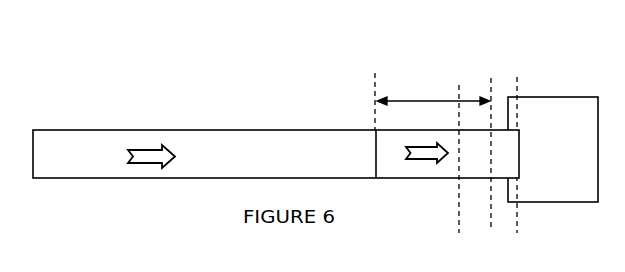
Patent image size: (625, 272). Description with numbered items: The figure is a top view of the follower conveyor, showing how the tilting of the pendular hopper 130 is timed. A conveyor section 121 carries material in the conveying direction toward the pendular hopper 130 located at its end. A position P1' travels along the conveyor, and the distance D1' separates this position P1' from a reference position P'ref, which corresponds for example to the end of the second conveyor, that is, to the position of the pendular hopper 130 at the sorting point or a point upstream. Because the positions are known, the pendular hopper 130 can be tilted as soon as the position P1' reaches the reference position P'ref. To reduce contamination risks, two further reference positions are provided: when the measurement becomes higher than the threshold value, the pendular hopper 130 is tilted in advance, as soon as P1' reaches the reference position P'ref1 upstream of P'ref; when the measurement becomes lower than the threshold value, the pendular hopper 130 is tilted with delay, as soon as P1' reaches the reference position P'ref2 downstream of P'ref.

The first component / workpiece section 121 is at (116, 166).
The pendular hopper 130 is at (574, 166).
The position P1' is at (353, 101).
The reference position P'ref is at (516, 123).
The reference position P'ref1 is at (418, 162).
The reference position P'ref2 is at (555, 131).
The distance D1' is at (433, 95).